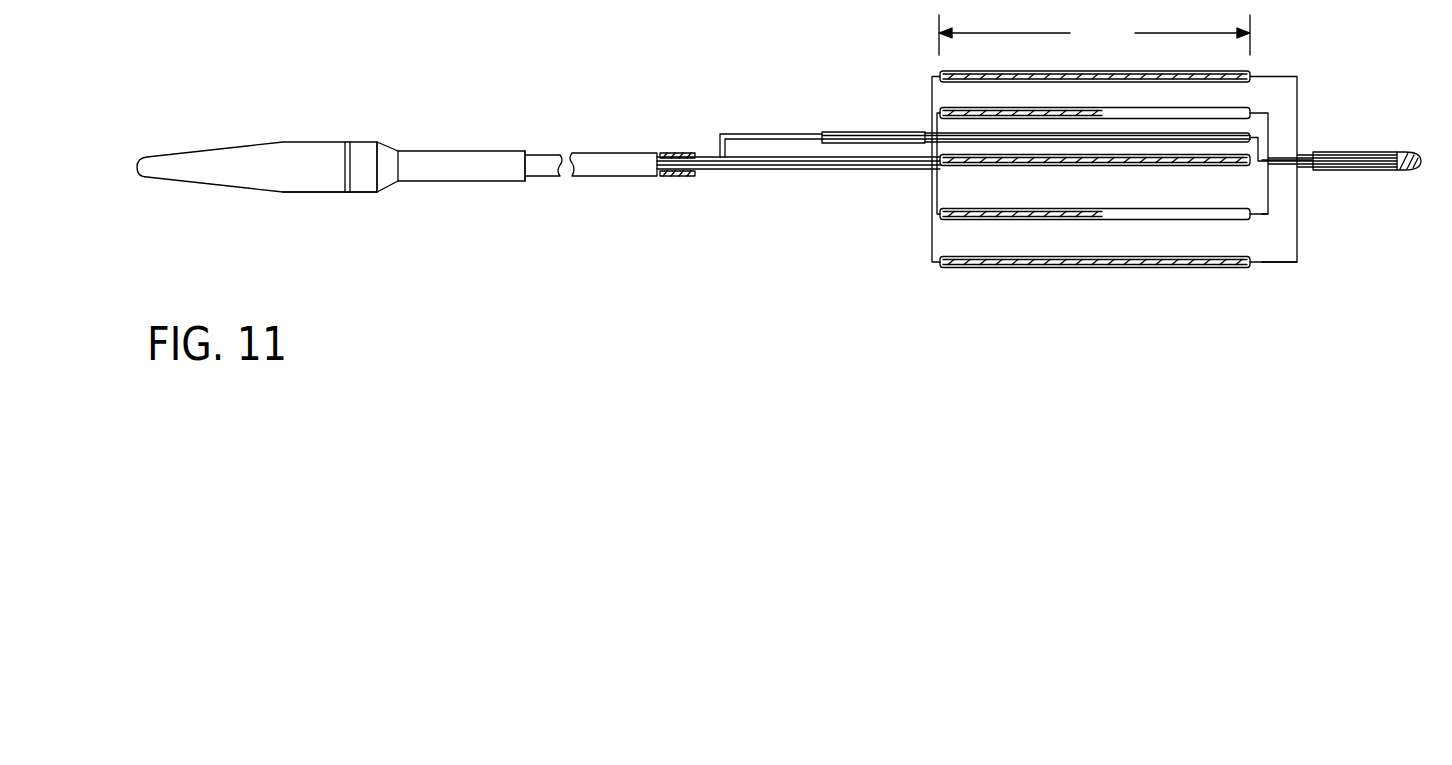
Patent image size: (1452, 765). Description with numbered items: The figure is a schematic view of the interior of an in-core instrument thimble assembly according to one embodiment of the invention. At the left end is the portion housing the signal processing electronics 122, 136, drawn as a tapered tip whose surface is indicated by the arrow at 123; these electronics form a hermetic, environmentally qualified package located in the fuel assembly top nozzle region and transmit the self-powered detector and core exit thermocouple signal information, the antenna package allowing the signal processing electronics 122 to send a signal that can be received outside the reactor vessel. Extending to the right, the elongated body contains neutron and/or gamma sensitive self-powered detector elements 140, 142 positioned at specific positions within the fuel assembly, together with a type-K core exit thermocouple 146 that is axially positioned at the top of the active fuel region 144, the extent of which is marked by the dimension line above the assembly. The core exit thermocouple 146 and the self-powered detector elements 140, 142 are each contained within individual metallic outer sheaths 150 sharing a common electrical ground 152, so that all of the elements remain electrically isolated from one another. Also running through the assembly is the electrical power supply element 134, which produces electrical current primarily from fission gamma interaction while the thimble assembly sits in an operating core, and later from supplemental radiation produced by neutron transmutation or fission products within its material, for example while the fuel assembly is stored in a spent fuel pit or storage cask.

The signal processing electronics 122 is at (256, 155).
The tip outer surface 123 is at (281, 191).
The signal processing electronics 136 is at (372, 150).
The common electrical ground 152 is at (490, 150).
The core exit thermocouple 146 is at (842, 132).
The active fuel region 144 is at (1094, 35).
The self-powered detector element 140 is at (1080, 100).
The electrical power supply element 134 is at (1007, 165).
The self-powered detector element 142 is at (1048, 222).
The metallic outer sheath 150 is at (1223, 166).